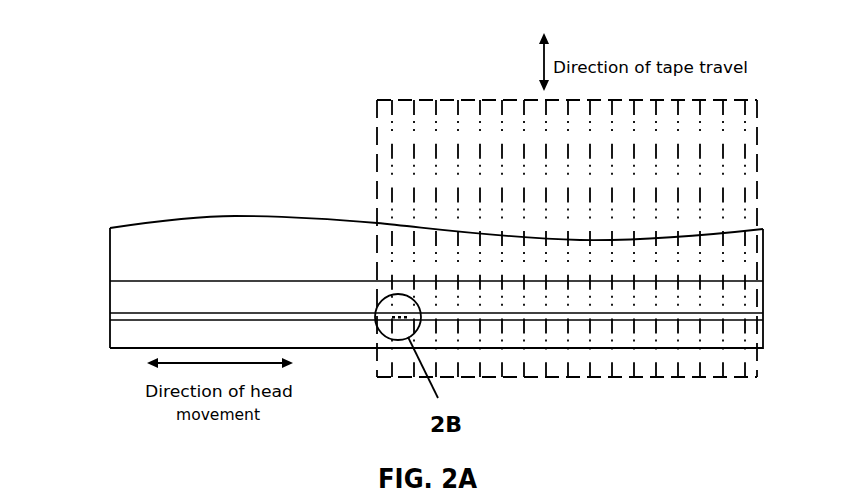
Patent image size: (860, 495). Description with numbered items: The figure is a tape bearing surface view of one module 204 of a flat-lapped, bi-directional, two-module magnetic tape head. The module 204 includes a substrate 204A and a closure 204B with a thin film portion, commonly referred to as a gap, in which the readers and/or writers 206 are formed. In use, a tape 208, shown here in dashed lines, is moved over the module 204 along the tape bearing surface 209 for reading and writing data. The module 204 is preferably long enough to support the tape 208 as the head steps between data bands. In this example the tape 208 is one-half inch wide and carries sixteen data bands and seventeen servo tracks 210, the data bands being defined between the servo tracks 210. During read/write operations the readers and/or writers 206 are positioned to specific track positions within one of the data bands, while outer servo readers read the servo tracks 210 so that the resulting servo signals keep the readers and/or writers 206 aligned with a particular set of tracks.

The module 204 is at (150, 206).
The substrate 204A is at (235, 217).
The closure 204B is at (110, 333).
The readers and/or writers 206 is at (372, 315).
The tape 208 is at (377, 103).
The tape bearing surface 209 is at (288, 298).
The servo tracks 210 is at (478, 177).